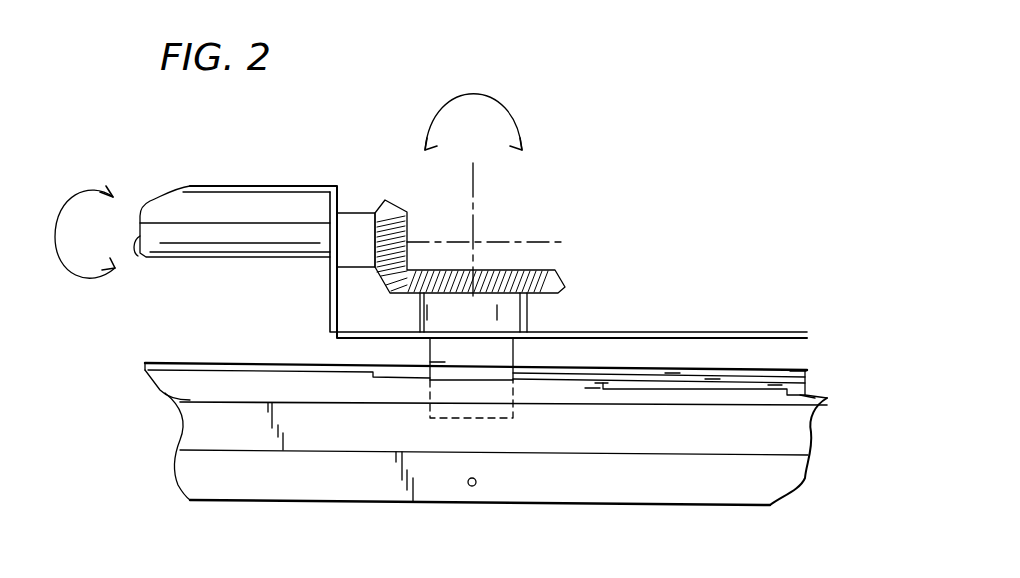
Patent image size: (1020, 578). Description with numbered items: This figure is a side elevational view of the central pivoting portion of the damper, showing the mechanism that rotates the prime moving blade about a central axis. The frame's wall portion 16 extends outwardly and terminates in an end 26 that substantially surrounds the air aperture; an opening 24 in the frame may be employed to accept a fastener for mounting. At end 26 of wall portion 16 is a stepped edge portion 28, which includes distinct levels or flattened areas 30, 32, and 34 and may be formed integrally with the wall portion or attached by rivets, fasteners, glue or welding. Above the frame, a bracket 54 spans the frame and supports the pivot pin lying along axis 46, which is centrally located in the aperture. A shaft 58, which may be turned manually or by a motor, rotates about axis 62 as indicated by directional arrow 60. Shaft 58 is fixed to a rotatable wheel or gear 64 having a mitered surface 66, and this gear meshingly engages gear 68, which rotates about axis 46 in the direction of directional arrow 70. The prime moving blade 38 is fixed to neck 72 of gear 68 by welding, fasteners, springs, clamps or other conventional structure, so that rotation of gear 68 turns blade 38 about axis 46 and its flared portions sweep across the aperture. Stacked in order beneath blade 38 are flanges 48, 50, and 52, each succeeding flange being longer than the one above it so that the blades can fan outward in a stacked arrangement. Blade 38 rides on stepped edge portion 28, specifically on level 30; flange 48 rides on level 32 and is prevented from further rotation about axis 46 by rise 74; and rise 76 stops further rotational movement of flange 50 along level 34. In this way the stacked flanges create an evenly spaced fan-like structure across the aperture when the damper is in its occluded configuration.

The wall portion 16 is at (197, 433).
The opening 24 is at (476, 484).
The end 26 is at (170, 392).
The stepped edge portion 28 is at (603, 388).
The level 30 is at (190, 365).
The level 32 is at (593, 390).
The level 34 is at (713, 379).
The blade 38 is at (673, 373).
The axis 46 is at (476, 188).
The flange 48 is at (775, 385).
The flange 50 is at (800, 371).
The flange 52 is at (812, 398).
The bracket 54 is at (292, 183).
The shaft 58 is at (195, 228).
The directional arrow 60 is at (68, 194).
The axis 62 is at (550, 240).
The gear 64 is at (357, 222).
The mitered surface 66 is at (398, 210).
The gear 68 is at (420, 312).
The directional arrow 70 is at (514, 97).
The neck 72 is at (430, 365).
The rise 74 is at (440, 362).
The rise 76 is at (600, 386).